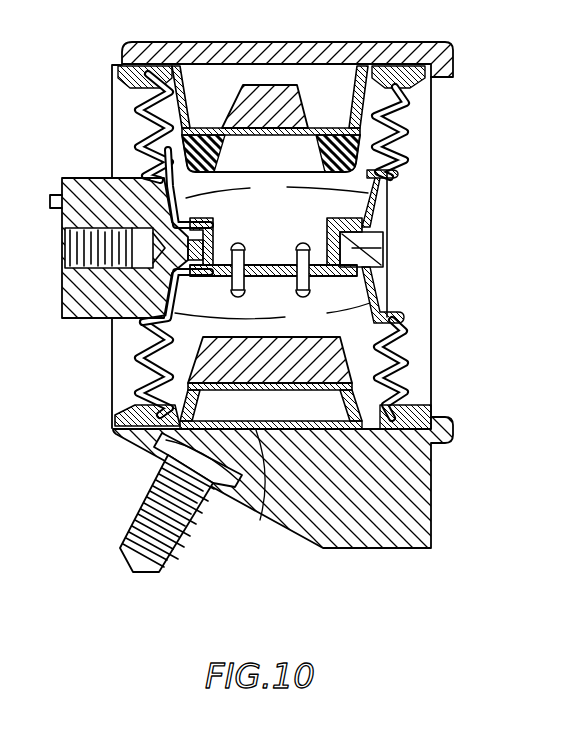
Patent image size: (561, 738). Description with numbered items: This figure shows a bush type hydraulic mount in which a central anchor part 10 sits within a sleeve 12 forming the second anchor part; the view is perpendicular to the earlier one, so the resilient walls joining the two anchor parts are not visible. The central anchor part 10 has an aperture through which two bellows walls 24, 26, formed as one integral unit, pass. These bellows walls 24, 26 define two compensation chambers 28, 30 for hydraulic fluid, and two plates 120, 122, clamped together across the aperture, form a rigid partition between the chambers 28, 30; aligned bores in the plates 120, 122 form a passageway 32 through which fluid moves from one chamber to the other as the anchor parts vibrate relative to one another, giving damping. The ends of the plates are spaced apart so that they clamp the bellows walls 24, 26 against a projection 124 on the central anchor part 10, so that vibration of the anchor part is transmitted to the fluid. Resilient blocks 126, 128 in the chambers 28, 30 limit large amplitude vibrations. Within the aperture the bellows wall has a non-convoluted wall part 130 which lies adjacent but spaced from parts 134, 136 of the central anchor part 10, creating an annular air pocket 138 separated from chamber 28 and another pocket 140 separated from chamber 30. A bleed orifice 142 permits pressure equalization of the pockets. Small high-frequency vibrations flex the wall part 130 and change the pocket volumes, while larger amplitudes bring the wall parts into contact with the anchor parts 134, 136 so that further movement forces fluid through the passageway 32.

The central anchor part 10 is at (73, 183).
The sleeve 12 is at (395, 530).
The bellows wall 24 is at (397, 382).
The bellows wall 26 is at (165, 190).
The compensation chamber 28 is at (281, 311).
The compensation chamber 30 is at (320, 211).
The passageway 32 is at (274, 260).
The plate 120 is at (384, 265).
The plate 122 is at (378, 232).
The projection 124 is at (348, 247).
The resilient block 126 is at (275, 368).
The resilient block 128 is at (202, 150).
The wall part 130 is at (272, 250).
The part of the central anchor part 134 is at (155, 190).
The part of the central anchor part 136 is at (378, 307).
The air pocket 138 is at (148, 348).
The air pocket 140 is at (377, 193).
The bleed orifice 142 is at (375, 210).